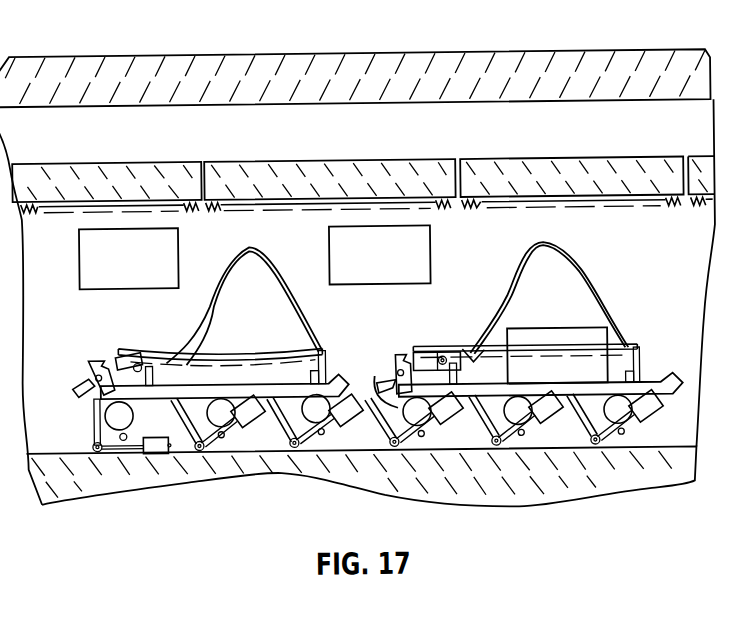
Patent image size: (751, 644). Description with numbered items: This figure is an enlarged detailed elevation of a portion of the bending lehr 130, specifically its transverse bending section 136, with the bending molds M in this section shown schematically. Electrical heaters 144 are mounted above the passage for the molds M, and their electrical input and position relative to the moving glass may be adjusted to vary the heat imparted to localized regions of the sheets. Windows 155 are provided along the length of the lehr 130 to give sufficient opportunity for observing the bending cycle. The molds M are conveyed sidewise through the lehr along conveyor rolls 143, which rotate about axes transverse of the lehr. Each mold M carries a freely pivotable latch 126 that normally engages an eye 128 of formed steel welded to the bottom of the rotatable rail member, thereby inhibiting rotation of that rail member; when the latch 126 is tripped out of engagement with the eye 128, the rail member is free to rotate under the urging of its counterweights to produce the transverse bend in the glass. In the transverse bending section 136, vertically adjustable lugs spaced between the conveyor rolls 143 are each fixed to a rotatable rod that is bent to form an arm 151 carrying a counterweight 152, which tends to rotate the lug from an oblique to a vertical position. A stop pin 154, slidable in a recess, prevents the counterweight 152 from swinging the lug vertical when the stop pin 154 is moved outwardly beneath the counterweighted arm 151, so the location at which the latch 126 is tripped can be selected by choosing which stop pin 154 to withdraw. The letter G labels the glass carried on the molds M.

The bending lehr 130 is at (295, 47).
The transverse bending section 136 is at (470, 138).
The electrical heaters 144 is at (470, 207).
The windows 155 is at (548, 334).
The conveyor rolls 143 is at (338, 408).
The eye 128 is at (117, 349).
The latch 126 is at (89, 366).
The arm 151 is at (118, 447).
The counterweight 152 is at (156, 452).
The stop pin 154 is at (127, 433).
The molds M is at (333, 356).
The guide block G is at (437, 353).